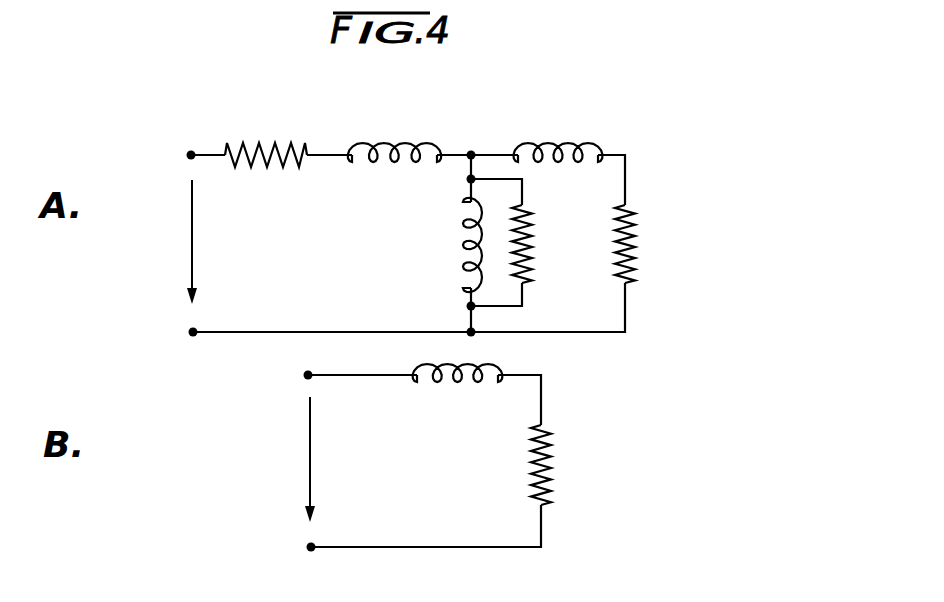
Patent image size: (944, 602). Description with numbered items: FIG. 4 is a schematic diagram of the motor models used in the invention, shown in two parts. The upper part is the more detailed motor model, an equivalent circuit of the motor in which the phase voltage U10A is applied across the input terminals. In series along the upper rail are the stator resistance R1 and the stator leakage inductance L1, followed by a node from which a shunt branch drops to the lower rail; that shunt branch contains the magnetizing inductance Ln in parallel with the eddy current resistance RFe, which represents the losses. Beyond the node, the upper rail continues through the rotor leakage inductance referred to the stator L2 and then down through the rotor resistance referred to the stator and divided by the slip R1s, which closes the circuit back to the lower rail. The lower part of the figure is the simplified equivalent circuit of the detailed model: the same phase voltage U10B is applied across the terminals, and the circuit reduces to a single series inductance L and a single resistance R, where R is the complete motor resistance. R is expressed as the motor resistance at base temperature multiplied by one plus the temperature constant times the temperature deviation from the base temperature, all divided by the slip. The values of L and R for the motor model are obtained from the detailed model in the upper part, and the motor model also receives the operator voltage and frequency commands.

The stator resistance R1 is at (266, 140).
The stator leakage inductance L1 is at (394, 137).
The rotor leakage inductance referred to the stator L2 is at (558, 137).
The magnetizing inductance Ln is at (454, 245).
The eddy current resistance RFe is at (541, 244).
The rotor resistance referred to the stator and divided by the slip R1s is at (650, 244).
The phase voltage U10A is at (170, 242).
The inductance of the equivalent circuit L is at (458, 389).
The complete motor resistance R is at (758, 458).
The phase voltage U10B is at (286, 459).